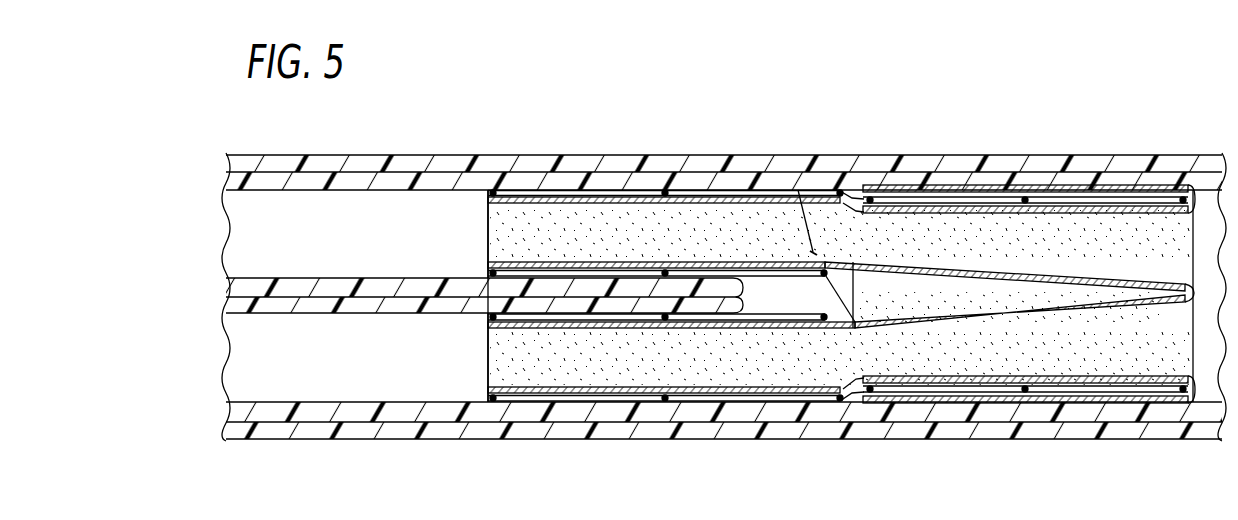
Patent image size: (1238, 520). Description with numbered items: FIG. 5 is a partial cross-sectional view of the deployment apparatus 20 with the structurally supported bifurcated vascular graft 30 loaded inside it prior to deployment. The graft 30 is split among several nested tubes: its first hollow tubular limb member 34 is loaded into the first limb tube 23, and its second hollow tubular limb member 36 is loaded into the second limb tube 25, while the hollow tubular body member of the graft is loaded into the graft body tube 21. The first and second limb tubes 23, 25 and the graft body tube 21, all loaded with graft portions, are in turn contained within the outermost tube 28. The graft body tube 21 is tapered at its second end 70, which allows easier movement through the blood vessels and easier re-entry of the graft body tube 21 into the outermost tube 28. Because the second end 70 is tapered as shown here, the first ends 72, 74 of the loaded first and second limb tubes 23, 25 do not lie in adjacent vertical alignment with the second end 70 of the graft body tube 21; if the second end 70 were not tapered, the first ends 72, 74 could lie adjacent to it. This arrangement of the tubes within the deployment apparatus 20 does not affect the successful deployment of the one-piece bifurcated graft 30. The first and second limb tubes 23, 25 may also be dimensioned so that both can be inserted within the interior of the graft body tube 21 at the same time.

The deployment apparatus 20 is at (716, 90).
The graft body tube 21 is at (968, 185).
The first limb tube 23 is at (392, 215).
The second limb tube 25 is at (297, 385).
The outermost tube 28 is at (875, 433).
The bifurcated vascular graft 30 is at (868, 188).
The first hollow tubular limb member 34 is at (585, 212).
The second hollow tubular limb member 36 is at (585, 373).
The second end of graft body tube 70 is at (797, 186).
The first end of first limb tube 72 is at (773, 183).
The first end of second limb tube 74 is at (733, 400).